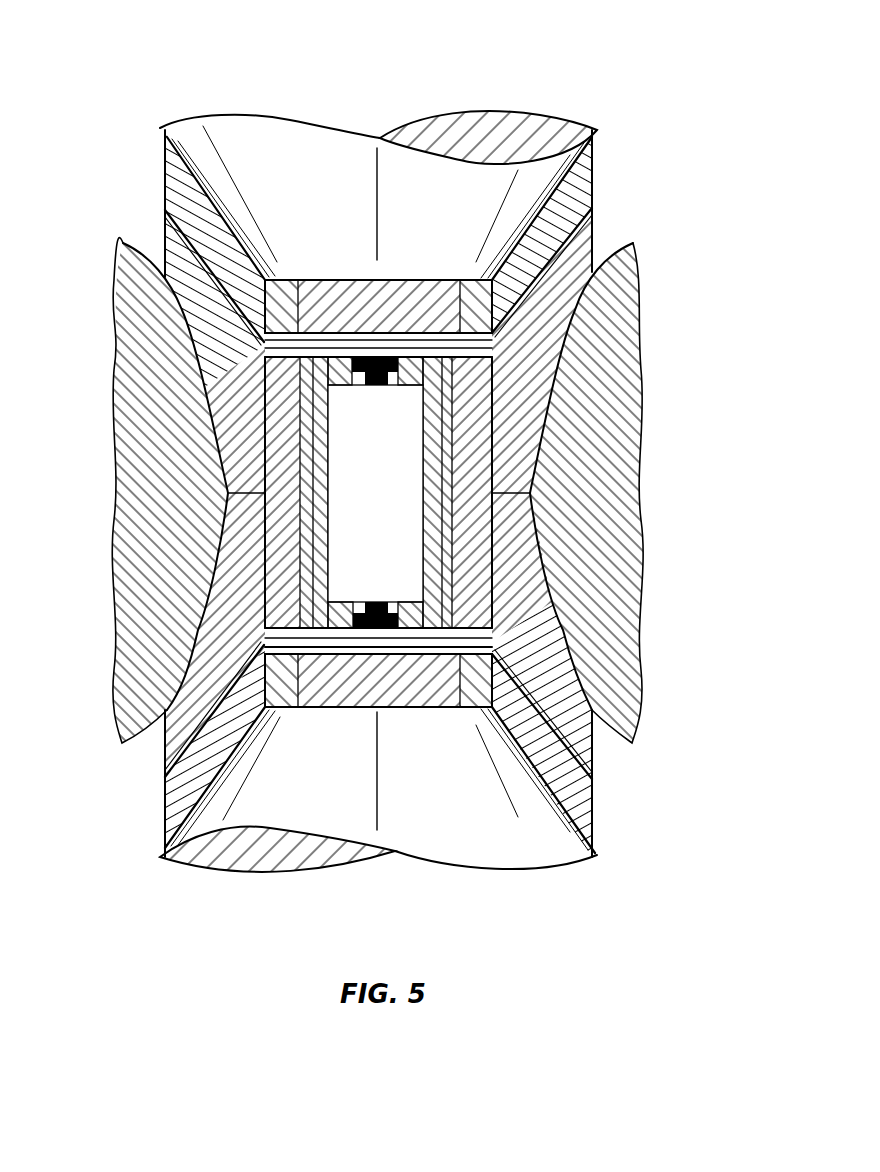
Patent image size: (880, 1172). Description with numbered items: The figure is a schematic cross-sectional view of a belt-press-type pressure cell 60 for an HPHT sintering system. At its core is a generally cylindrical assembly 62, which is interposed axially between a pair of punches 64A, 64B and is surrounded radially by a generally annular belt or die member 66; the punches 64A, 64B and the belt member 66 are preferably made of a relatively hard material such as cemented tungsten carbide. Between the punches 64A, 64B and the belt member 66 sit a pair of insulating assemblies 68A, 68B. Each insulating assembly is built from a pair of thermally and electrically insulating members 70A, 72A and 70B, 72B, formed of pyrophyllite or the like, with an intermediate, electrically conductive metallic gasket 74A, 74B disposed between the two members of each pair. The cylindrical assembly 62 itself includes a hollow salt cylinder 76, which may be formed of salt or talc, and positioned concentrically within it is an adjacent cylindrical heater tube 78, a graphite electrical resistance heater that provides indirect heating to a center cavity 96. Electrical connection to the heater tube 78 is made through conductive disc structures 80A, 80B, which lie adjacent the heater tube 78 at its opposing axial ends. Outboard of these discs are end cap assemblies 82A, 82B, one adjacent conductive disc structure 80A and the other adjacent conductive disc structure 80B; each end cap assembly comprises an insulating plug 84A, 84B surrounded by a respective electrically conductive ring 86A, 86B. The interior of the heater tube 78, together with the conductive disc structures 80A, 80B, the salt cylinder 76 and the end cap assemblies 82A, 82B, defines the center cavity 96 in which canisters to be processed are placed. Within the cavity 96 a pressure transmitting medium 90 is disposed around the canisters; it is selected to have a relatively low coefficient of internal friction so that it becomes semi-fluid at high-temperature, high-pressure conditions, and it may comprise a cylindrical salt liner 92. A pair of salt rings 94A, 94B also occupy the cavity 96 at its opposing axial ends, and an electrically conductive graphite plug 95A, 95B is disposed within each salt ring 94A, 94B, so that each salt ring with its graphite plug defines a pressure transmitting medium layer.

The pressure cell 60 is at (705, 246).
The cylindrical assembly 62 is at (232, 375).
The punch 64A is at (540, 118).
The punch 64B is at (580, 863).
The belt or die member 66 is at (640, 707).
The insulating assembly 68A is at (130, 188).
The insulating assembly 68B is at (135, 793).
The thermally and electrically insulating member 70A is at (592, 175).
The thermally and electrically insulating member 70B is at (597, 820).
The thermally and electrically insulating member 72A is at (592, 243).
The thermally and electrically insulating member 72B is at (597, 757).
The electrically conductive metallic gasket 74A is at (592, 210).
The electrically conductive metallic gasket 74B is at (597, 789).
The hollow salt cylinder 76 is at (282, 480).
The heater tube 78 is at (302, 550).
The conductive disc structure 80A is at (448, 337).
The conductive disc structure 80B is at (450, 657).
The end cap assembly 82A is at (305, 256).
The end cap assembly 82B is at (312, 734).
The insulating plug 84A is at (365, 278).
The insulating plug 84B is at (400, 710).
The electrically conductive ring 86A is at (478, 280).
The electrically conductive ring 86B is at (470, 710).
The pressure transmitting medium 90 is at (460, 430).
The cylindrical salt liner 92 is at (447, 470).
The salt ring 94A is at (398, 368).
The salt ring 94B is at (360, 622).
The electrically conductive graphite plug 95A is at (352, 388).
The electrically conductive graphite plug 95B is at (400, 608).
The center cavity 96 is at (390, 504).